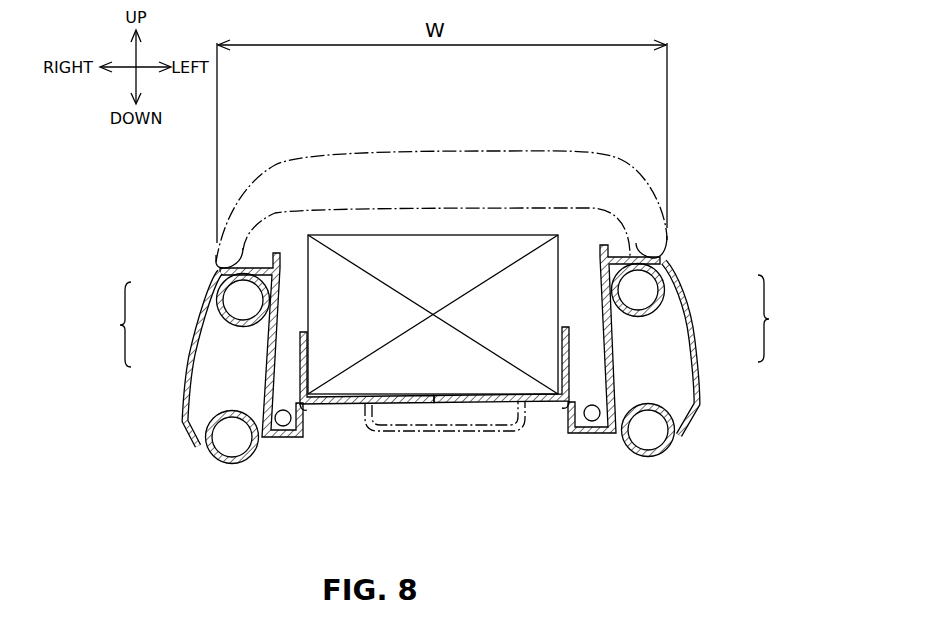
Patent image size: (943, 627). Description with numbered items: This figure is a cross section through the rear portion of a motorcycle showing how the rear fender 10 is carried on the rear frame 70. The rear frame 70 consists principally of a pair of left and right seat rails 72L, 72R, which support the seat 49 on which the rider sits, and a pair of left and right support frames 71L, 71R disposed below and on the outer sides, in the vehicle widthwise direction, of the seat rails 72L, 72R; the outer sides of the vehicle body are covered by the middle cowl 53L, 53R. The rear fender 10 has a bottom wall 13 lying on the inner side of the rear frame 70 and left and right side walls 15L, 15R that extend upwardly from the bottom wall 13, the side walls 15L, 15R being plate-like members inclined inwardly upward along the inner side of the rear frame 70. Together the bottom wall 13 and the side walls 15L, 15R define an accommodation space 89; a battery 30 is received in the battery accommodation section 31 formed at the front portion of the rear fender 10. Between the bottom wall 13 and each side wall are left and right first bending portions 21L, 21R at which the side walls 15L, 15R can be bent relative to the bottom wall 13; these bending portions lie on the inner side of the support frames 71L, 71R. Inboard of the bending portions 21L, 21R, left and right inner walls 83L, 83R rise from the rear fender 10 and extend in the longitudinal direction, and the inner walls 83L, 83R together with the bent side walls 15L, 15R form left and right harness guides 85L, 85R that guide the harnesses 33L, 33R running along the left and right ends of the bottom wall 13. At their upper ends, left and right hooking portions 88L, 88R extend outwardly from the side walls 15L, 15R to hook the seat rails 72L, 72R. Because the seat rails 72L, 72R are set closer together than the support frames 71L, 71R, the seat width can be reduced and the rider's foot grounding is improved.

The rear fender 10 is at (397, 404).
The bottom wall 13 is at (455, 402).
The right side wall 15R is at (266, 357).
The left side wall 15L is at (616, 355).
The right first bending portion 21R is at (256, 449).
The left first bending portion 21L is at (622, 438).
The battery 30 is at (433, 250).
The battery accommodation section 31 is at (306, 356).
The right harness 33R is at (287, 432).
The left harness 33L is at (591, 423).
The seat 49 is at (582, 153).
The middle cowl (right) 53R is at (181, 422).
The middle cowl (left) 53L is at (700, 402).
The rear frame 70 is at (439, 321).
The right support frame 71R is at (223, 410).
The left support frame 71L is at (663, 411).
The right seat rail 72R is at (220, 302).
The left seat rail 72L is at (664, 281).
The right inner wall 83R is at (303, 415).
The left inner wall 83L is at (565, 417).
The right harness guide 85R is at (306, 405).
The left harness guide 85L is at (566, 402).
The right hooking portion 88R is at (230, 262).
The left hooking portion 88L is at (638, 250).
The accommodation space 89 is at (507, 317).